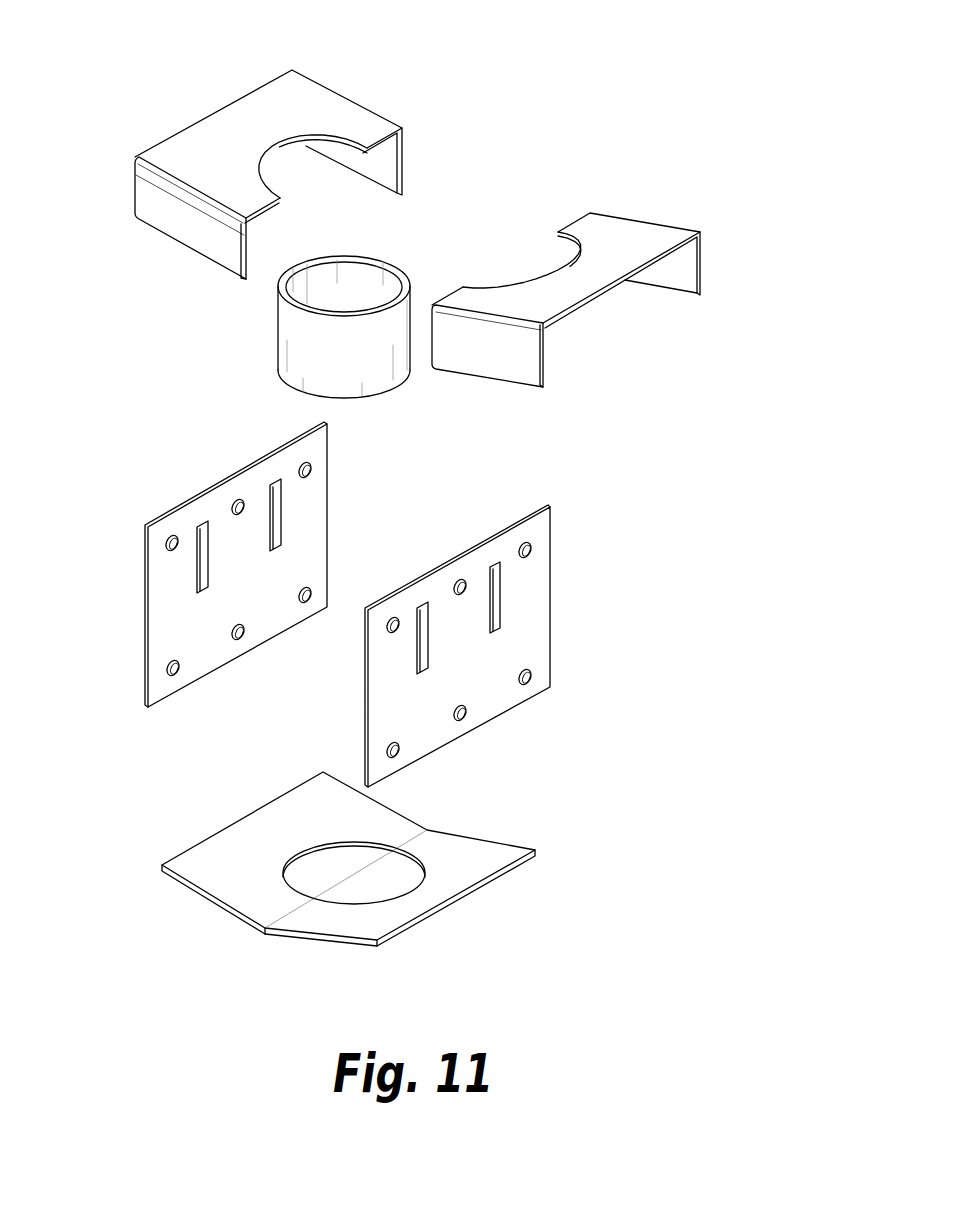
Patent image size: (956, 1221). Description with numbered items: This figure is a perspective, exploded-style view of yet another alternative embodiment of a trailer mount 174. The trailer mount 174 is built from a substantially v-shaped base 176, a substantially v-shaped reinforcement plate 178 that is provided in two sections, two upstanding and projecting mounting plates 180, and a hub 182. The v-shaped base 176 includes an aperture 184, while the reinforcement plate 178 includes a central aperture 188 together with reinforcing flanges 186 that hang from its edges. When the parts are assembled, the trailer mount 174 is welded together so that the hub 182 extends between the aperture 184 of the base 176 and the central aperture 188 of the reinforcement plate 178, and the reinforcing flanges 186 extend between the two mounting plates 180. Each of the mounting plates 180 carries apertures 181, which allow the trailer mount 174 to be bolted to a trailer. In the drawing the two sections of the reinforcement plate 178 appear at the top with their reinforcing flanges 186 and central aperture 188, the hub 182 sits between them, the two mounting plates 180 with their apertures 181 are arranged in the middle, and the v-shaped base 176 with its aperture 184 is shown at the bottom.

The trailer mount 174 is at (778, 144).
The v-shaped base 176 is at (348, 867).
The v-shaped reinforcement plate 178 is at (392, 204).
The mounting plates 180 is at (347, 576).
The apertures 181 is at (178, 535).
The hub 182 is at (373, 360).
The aperture 184 is at (333, 863).
The reinforcing flanges 186 is at (185, 227).
The central aperture 188 is at (289, 172).